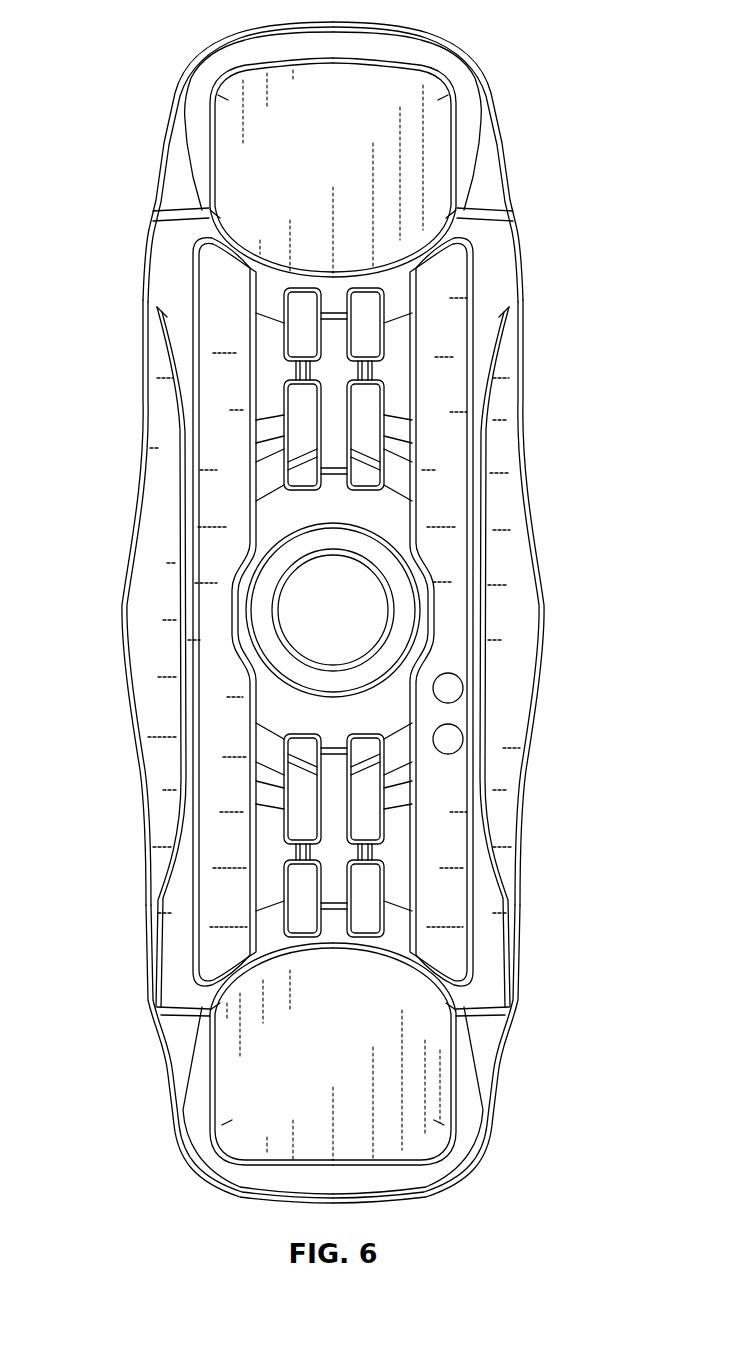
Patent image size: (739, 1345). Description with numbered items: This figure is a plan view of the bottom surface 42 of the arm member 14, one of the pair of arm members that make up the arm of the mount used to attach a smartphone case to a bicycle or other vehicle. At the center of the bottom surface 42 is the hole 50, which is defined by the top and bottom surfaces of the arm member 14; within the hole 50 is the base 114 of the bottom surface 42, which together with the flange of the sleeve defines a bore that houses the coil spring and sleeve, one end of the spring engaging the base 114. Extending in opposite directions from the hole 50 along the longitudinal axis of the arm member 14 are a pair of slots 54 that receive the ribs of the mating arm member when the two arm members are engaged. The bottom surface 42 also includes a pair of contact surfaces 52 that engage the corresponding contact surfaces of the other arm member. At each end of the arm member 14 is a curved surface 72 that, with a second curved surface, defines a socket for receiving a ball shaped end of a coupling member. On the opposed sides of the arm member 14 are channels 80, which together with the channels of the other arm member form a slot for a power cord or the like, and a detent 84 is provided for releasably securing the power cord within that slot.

The arm member 14 is at (505, 192).
The bottom surface 42 is at (490, 297).
The hole 50 is at (395, 605).
The contact surfaces 52 is at (217, 430).
The slots 54 is at (349, 414).
The curved surface 72 is at (438, 128).
The channel 80 is at (141, 593).
The detent 84 is at (126, 636).
The base 114 is at (308, 607).